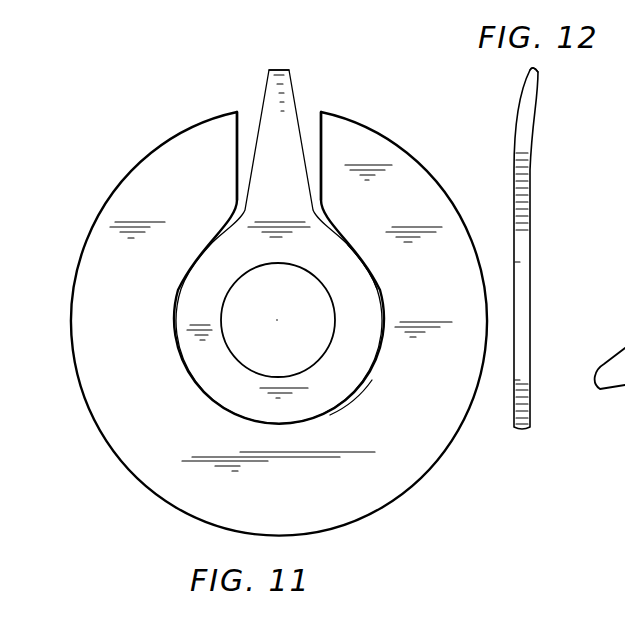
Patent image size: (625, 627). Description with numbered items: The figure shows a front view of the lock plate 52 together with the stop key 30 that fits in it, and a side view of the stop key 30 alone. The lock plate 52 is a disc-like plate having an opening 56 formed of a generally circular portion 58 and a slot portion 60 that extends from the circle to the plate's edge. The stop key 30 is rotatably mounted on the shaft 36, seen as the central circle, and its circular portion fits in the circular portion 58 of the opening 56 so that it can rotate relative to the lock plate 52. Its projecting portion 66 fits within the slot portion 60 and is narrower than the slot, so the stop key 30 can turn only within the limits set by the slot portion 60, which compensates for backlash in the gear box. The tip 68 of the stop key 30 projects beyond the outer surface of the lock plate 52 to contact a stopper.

In FIG. 11, the stop key 30 is at (317, 198).
In FIG. 12, the stop key 30 is at (530, 239).
In FIG. 11, the shaft 36 is at (328, 308).
In FIG. 11, the lock plate 52 is at (90, 247).
In FIG. 11, the opening 56 is at (362, 245).
In FIG. 11, the circular portion 58 is at (361, 386).
In FIG. 11, the slot portion 60 is at (323, 148).
In FIG. 11, the projecting portion 66 is at (249, 169).
In FIG. 11, the tab end of strip 68 is at (280, 72).
In FIG. 12, the tab end of strip 68 is at (541, 79).